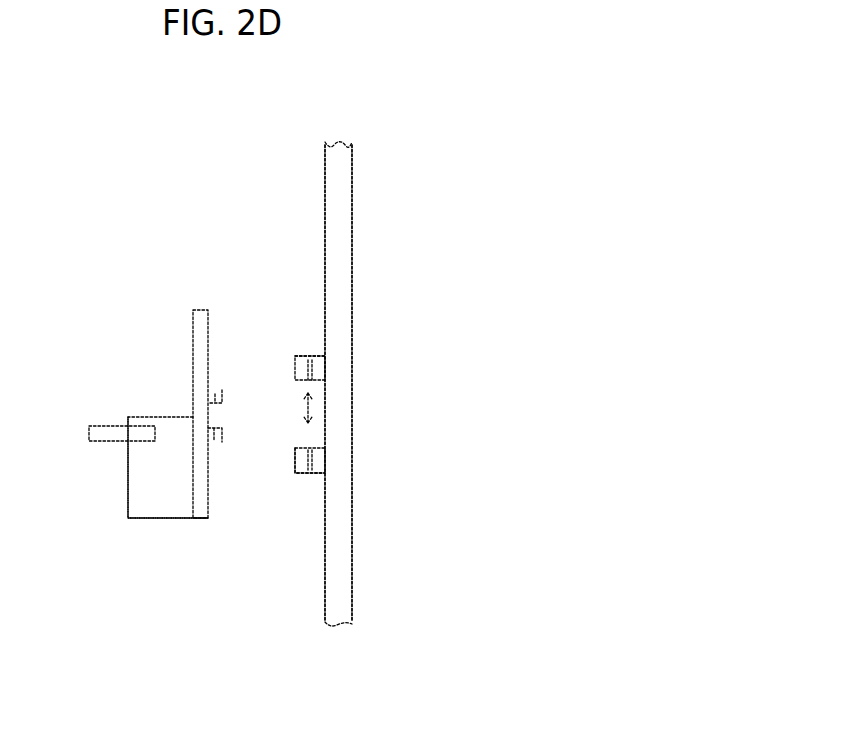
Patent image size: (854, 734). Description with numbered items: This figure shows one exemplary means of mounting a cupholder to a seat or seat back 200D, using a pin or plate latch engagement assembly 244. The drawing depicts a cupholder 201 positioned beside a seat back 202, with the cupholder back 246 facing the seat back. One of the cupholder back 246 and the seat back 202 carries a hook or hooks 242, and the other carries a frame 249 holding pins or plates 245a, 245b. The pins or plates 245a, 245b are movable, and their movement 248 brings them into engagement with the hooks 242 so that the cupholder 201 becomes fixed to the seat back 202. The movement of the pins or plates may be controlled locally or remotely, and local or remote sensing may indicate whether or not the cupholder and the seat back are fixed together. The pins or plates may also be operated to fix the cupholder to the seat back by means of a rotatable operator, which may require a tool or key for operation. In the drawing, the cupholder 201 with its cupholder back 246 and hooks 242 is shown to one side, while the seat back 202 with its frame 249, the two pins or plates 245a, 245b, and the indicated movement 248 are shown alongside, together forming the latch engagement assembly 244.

The seat or seat back 200D is at (463, 92).
The cupholder 201 is at (102, 483).
The seat back 202 is at (343, 231).
The hook or hooks 242 is at (228, 433).
The pin or plate latch engagement assembly 244 is at (292, 477).
The pin or plate 245a is at (305, 376).
The pin or plate 245b is at (313, 455).
The cupholder back 246 is at (203, 518).
The movement of pins or plates 248 is at (310, 403).
The frame 249 is at (300, 352).